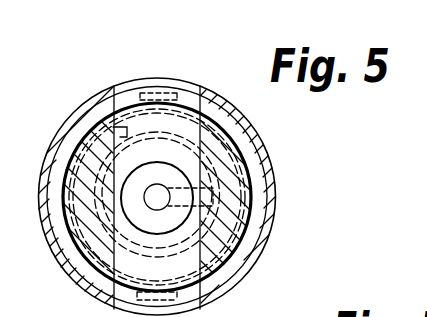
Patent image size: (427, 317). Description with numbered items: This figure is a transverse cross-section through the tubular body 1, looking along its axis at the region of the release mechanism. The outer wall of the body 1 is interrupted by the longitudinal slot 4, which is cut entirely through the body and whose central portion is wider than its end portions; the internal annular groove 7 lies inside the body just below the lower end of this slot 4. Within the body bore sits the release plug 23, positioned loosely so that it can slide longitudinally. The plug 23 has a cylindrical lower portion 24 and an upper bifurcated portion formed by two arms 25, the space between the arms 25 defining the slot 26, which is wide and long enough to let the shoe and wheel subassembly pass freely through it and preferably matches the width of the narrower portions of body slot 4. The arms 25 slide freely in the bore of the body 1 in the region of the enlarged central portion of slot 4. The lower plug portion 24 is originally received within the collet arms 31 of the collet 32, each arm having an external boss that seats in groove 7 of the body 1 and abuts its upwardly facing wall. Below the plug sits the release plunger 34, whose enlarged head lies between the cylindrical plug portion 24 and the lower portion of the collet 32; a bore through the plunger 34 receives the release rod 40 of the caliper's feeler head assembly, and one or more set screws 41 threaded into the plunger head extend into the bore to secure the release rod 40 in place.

The body 1 is at (268, 156).
The longitudinal slot 4 is at (188, 91).
The internal annular groove 7 is at (253, 225).
The release plug 23 is at (249, 185).
The cylindrical lower portion 24 is at (173, 150).
The arms 25 is at (227, 208).
The slot 26 is at (120, 130).
The collet arms 31 is at (243, 248).
The collet 32 is at (128, 272).
The release plunger 34 is at (155, 162).
The release rod 40 is at (157, 197).
The set screws 41 is at (236, 146).